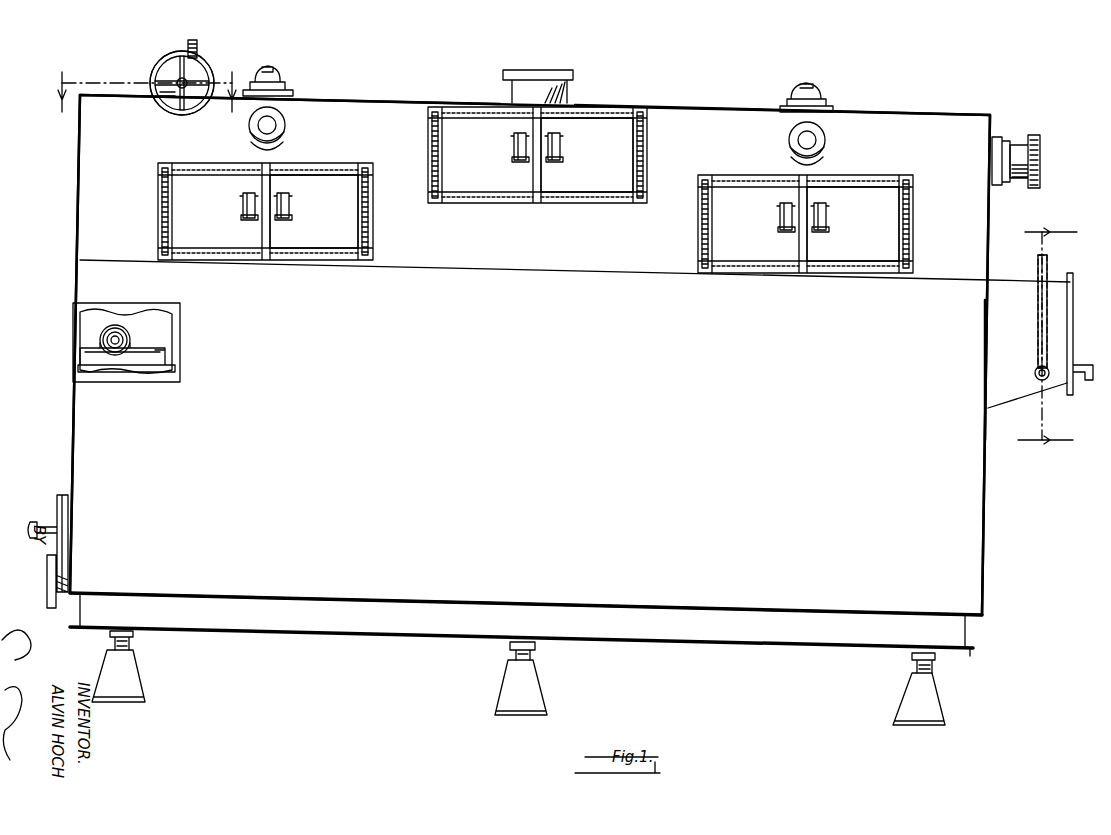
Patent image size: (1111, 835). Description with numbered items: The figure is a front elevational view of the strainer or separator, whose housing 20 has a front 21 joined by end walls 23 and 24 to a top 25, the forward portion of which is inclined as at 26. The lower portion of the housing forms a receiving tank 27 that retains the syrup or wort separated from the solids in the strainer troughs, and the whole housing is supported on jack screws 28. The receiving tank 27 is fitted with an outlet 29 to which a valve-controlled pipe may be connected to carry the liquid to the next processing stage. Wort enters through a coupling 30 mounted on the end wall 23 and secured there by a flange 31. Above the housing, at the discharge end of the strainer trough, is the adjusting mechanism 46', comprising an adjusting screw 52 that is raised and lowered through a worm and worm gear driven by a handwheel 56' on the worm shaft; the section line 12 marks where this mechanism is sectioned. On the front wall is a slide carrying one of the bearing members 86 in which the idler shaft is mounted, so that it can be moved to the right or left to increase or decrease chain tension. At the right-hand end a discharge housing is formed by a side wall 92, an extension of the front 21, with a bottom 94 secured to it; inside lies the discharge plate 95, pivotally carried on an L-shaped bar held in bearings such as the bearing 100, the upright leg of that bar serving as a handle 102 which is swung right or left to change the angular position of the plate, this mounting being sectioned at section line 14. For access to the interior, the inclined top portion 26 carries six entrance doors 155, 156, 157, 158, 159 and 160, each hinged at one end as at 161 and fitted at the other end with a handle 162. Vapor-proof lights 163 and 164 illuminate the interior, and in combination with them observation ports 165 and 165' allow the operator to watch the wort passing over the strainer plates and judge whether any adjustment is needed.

The section line 12- 12 is at (144, 83).
The section line 14- 14 is at (1047, 336).
The housing 20 is at (990, 95).
The front 21 is at (615, 516).
The end wall 23 is at (986, 500).
The end wall 24 is at (75, 296).
The top 25 is at (352, 101).
The inclined portion of the top 26 is at (705, 112).
The receiving tank 27 is at (950, 560).
The jack screws 28 is at (132, 650).
The outlet 29 is at (58, 584).
The coupling 30 is at (1018, 182).
The flange 31 is at (1000, 138).
The adjusting mechanism 46' is at (166, 78).
The adjusting screw 52 is at (198, 52).
The handwheel 56' is at (173, 92).
The bearing members 86 is at (128, 338).
The side wall 92 is at (992, 365).
The bottom 94 is at (1022, 403).
The discharge plate 95 is at (1088, 365).
The bearing 100 is at (1034, 378).
The handle portion 102 is at (1048, 268).
The entrance door 155 is at (898, 231).
The entrance door 156 is at (712, 233).
The entrance door 157 is at (640, 153).
The entrance door 158 is at (474, 193).
The entrance door 159 is at (335, 185).
The entrance door 160 is at (200, 185).
The hinge 161 is at (168, 201).
The handles 162 is at (283, 217).
The vapor-proof light 163 is at (822, 95).
The vapor-proof light 164 is at (282, 79).
The observation port 165 is at (834, 143).
The observation port 165' is at (291, 128).